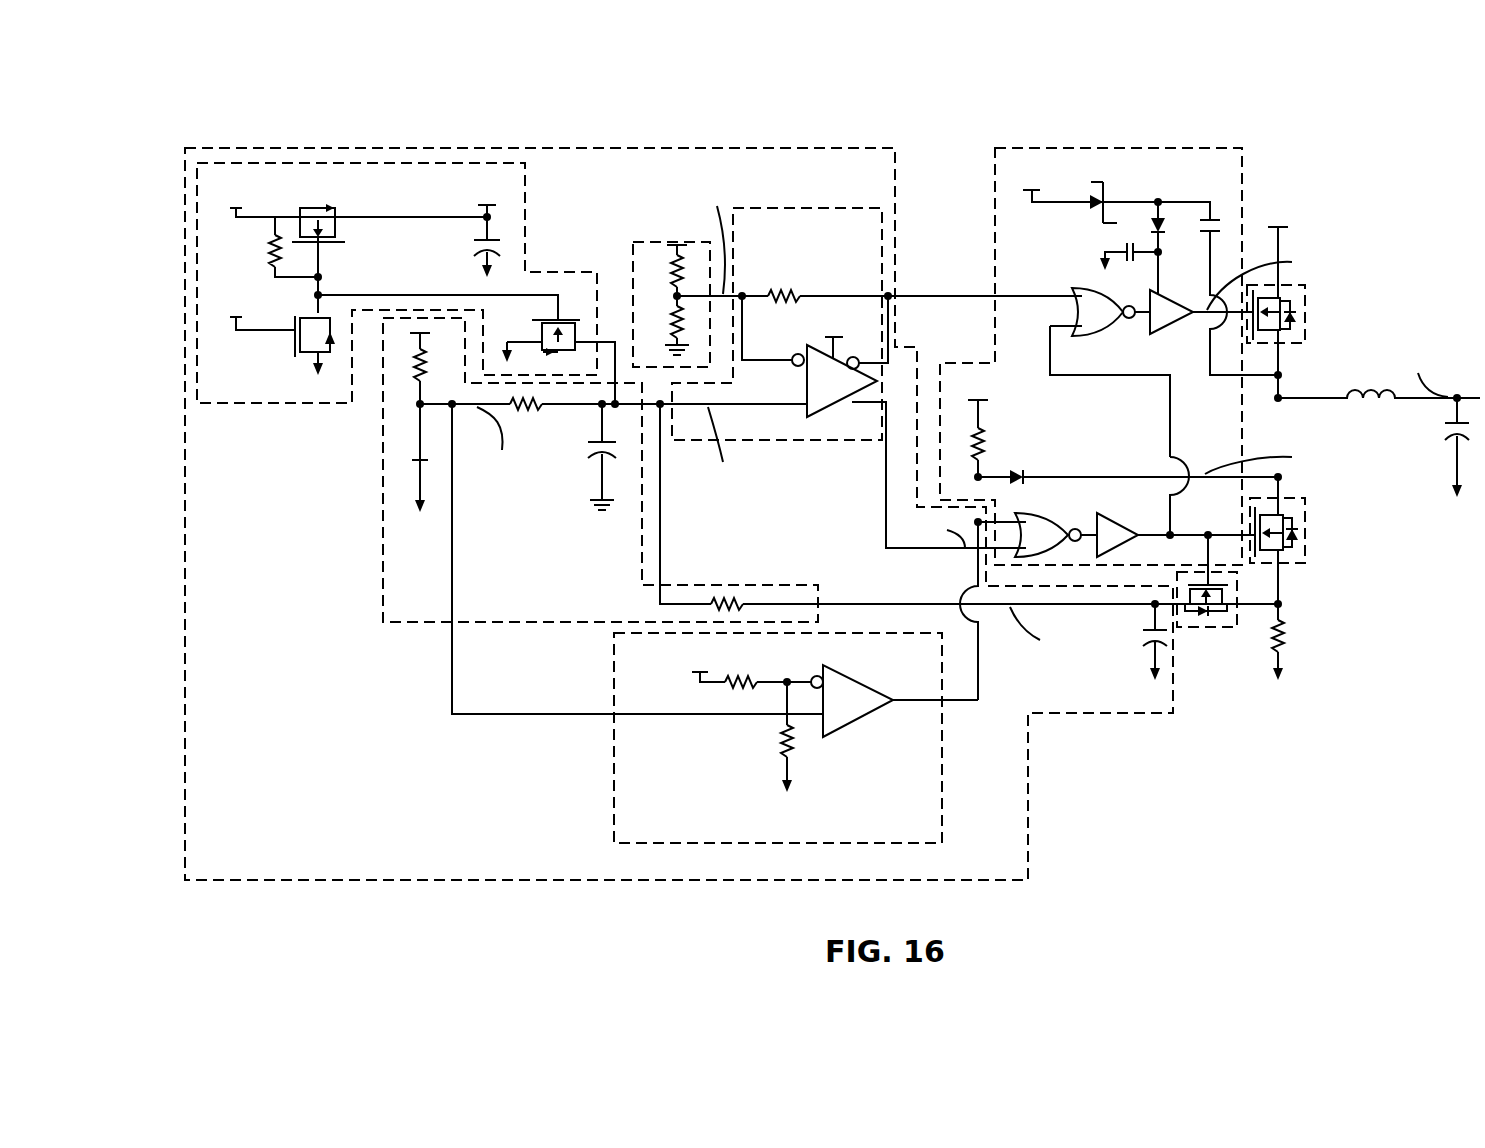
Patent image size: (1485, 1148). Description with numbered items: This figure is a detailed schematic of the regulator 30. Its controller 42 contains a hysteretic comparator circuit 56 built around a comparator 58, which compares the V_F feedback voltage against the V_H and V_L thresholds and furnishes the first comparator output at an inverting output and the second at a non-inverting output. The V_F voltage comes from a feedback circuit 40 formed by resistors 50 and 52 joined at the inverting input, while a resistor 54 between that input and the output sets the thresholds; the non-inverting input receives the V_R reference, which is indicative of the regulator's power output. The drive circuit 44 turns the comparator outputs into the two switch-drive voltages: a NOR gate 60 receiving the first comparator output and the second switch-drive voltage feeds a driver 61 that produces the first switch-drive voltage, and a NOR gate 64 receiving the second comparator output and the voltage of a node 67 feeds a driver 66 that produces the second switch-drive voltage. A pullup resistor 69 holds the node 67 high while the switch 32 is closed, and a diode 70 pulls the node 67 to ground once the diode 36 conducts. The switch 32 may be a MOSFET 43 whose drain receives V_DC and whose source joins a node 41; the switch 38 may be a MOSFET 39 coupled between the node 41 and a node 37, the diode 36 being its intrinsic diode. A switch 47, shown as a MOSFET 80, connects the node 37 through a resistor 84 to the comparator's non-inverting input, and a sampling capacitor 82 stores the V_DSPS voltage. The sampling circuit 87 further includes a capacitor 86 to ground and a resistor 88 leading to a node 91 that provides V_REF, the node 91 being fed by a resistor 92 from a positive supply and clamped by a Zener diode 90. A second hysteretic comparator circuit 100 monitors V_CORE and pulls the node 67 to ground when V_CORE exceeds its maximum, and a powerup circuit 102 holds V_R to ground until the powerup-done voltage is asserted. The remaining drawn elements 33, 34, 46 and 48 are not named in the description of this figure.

The regulator 30 is at (832, 507).
The switch 32 is at (1308, 341).
The output capacitor 33 is at (1450, 424).
The inductor 34 is at (1357, 395).
The diode 36 is at (1309, 559).
The node 37 is at (1282, 606).
The switch 38 is at (1306, 550).
The MOSFET 39 is at (1270, 552).
The feedback circuit 40 is at (646, 279).
The node 41 is at (1280, 405).
The controller 42 is at (778, 148).
The MOSFET 43 is at (1266, 332).
The drive circuit 44 is at (1109, 325).
The resistor 46 is at (1283, 650).
The switch 47 is at (1236, 604).
The ground 48 is at (1448, 448).
The resistor 50 is at (668, 272).
The resistor 52 is at (670, 313).
The resistor 54 is at (790, 291).
The hysteretic comparator circuit 56 is at (849, 378).
The comparator 58 is at (807, 377).
The NOR gate 60 is at (1087, 290).
The driver 61 is at (1160, 293).
The NOR gate 64 is at (1027, 513).
The driver 66 is at (1108, 513).
The node 67 is at (980, 467).
The pullup resistor 69 is at (978, 427).
The diode 70 is at (1025, 470).
The MOSFET 80 is at (1227, 619).
The sampling capacitor 82 is at (1150, 630).
The resistor 84 is at (722, 598).
The capacitor 86 is at (600, 450).
The sampling circuit 87 is at (752, 470).
The resistor 88 is at (527, 412).
The Zener diode 90 is at (412, 458).
The node 91 is at (421, 400).
The resistor 92 is at (410, 355).
The hysteretic comparator circuit 100 is at (942, 797).
The powerup circuit 102 is at (231, 163).